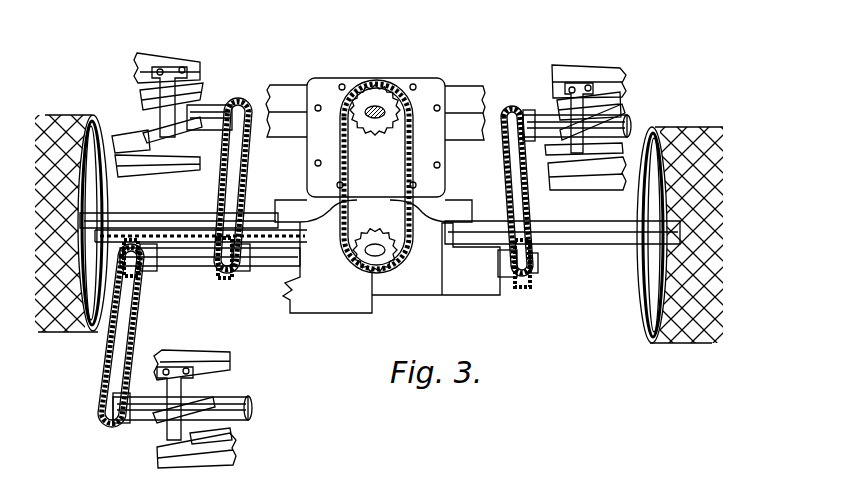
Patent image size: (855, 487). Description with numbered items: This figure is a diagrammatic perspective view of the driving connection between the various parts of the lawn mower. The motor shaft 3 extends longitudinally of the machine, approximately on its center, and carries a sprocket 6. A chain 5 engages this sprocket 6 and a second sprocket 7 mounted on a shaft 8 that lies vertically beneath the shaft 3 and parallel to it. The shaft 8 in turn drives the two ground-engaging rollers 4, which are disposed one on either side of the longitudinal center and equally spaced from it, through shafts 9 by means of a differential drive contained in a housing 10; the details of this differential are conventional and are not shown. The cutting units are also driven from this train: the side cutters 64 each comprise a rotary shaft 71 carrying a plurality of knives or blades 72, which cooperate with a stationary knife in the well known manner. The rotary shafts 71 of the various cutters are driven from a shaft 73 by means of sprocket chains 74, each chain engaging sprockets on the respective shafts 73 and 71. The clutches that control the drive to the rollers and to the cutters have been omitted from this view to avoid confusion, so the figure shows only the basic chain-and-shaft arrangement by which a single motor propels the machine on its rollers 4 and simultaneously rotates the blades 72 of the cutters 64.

The shaft 3 is at (380, 106).
The rollers 4 is at (73, 116).
The chain 5 is at (411, 125).
The sprocket 6 is at (389, 100).
The sprocket 7 is at (396, 252).
The shaft 8 is at (374, 268).
The shafts 9 is at (170, 215).
The housing 10 is at (412, 278).
The side cutters 64 is at (137, 52).
The rotary shaft 71 is at (212, 110).
The blades 72 is at (176, 58).
The shaft 73 is at (194, 262).
The sprocket chains 74 is at (248, 178).